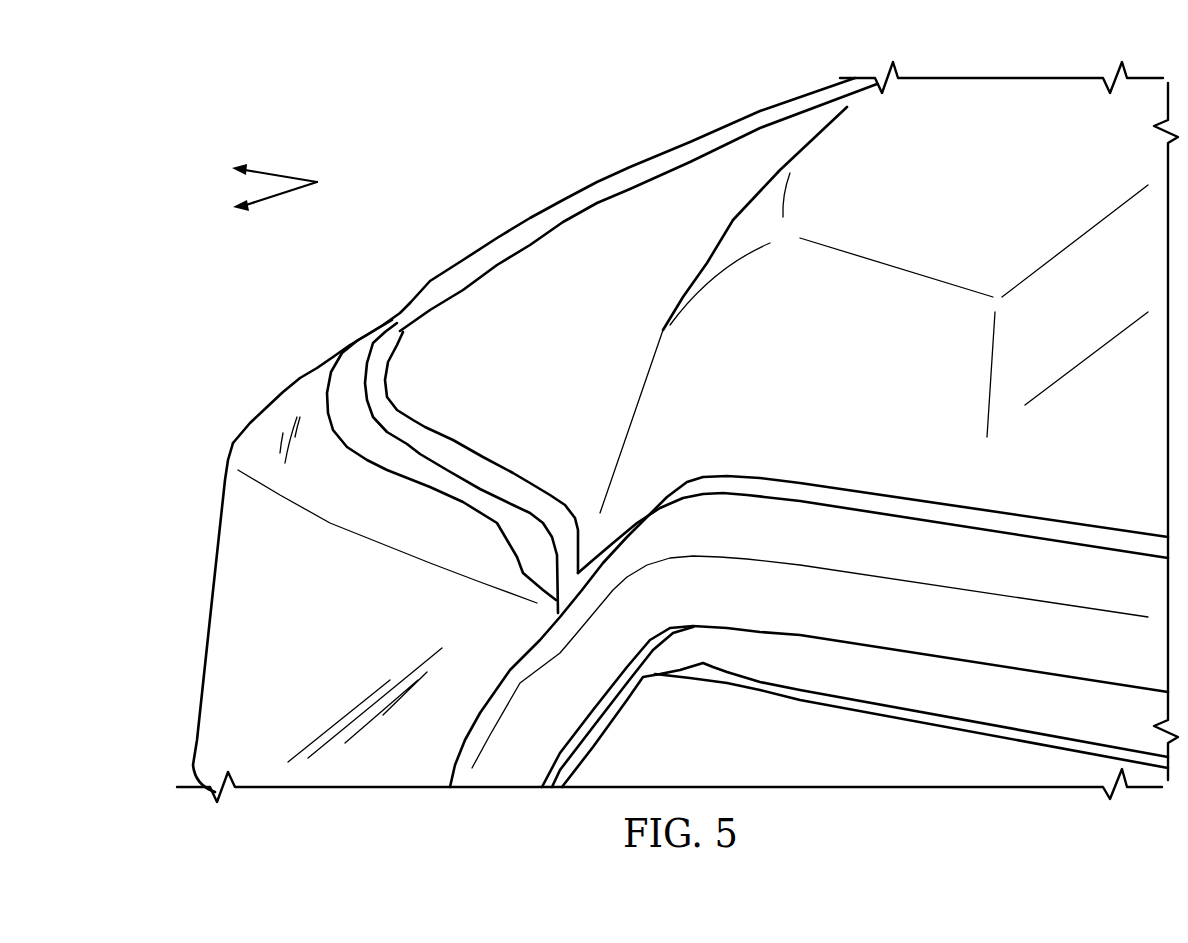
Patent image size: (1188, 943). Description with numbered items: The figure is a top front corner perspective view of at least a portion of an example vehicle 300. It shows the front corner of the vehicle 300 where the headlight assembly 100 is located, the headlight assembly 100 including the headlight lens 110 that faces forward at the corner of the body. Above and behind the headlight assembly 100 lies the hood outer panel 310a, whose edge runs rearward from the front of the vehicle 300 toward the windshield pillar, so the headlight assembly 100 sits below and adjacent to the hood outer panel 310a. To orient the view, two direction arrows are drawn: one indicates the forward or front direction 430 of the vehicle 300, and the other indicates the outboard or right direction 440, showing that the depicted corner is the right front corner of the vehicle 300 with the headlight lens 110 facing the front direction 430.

The headlight assembly 100 is at (203, 398).
The headlight lens 110 is at (197, 682).
The vehicle 300 is at (500, 84).
The hood outer panel 310a is at (645, 200).
The front direction 430 is at (280, 197).
The outboard direction 440 is at (293, 177).